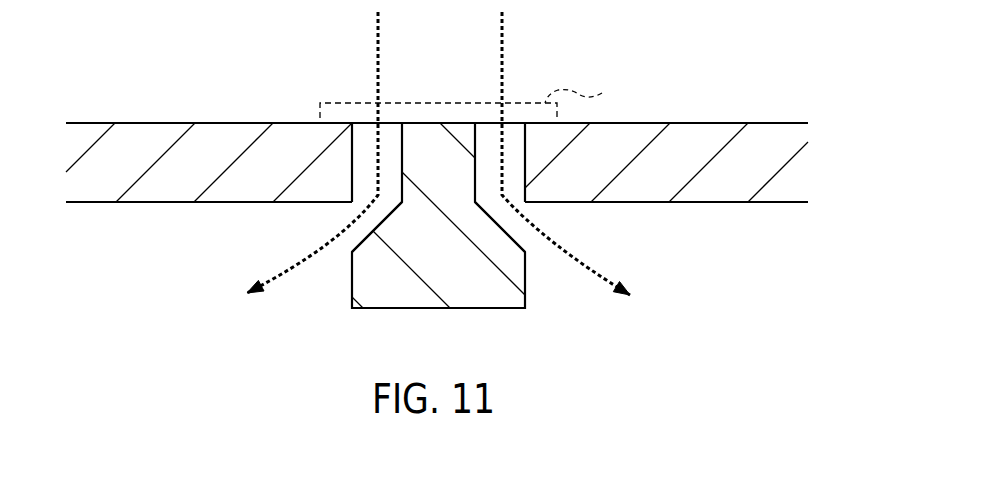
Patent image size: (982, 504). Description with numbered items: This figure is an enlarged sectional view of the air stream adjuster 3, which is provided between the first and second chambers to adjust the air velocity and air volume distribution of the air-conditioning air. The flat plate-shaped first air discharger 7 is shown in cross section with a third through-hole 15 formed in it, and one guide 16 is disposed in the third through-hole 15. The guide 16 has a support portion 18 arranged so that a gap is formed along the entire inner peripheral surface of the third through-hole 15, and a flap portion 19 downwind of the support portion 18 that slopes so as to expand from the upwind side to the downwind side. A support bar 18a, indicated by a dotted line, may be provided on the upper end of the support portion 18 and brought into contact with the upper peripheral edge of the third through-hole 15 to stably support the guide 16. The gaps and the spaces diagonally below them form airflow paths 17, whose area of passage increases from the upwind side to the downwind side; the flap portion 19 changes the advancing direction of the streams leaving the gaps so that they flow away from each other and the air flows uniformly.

The air stream adjuster 3 is at (364, 97).
The first air discharger 7 is at (237, 123).
The third through-hole 15 is at (525, 150).
The guide 16 is at (431, 116).
The airflow path 17 is at (352, 210).
The support portion 18 is at (395, 125).
The support bar 18a is at (610, 82).
The flap portion 19 is at (367, 234).